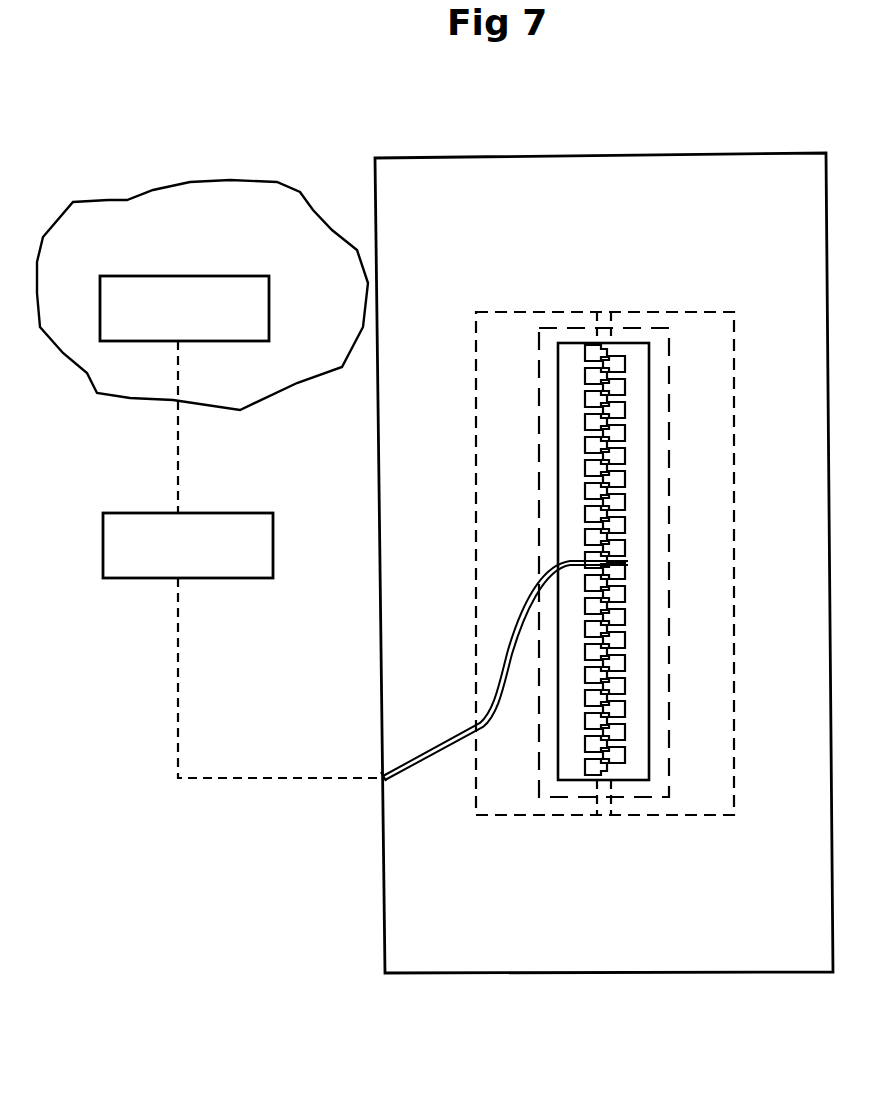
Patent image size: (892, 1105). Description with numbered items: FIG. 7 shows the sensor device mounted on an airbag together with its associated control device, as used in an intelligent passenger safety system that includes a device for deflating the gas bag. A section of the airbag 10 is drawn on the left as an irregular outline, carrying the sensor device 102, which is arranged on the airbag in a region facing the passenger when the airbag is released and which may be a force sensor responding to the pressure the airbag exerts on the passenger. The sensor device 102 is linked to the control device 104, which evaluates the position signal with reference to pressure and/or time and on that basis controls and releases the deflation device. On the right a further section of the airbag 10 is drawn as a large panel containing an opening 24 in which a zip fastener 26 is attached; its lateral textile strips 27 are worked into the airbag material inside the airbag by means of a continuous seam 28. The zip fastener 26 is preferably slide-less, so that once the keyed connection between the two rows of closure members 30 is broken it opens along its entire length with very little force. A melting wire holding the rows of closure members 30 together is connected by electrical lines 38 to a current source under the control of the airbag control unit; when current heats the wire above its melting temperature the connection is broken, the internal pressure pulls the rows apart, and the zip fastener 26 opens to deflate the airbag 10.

The airbag 10 is at (213, 210).
The sensor device 102 is at (237, 273).
The control device 104 is at (202, 508).
The zip fastener 26 is at (633, 363).
The lateral textile strips 27 is at (487, 383).
The continuous seam 28 is at (538, 497).
The closure members 30 is at (620, 540).
The opening 24 is at (557, 598).
The electrical lines 38 is at (383, 773).